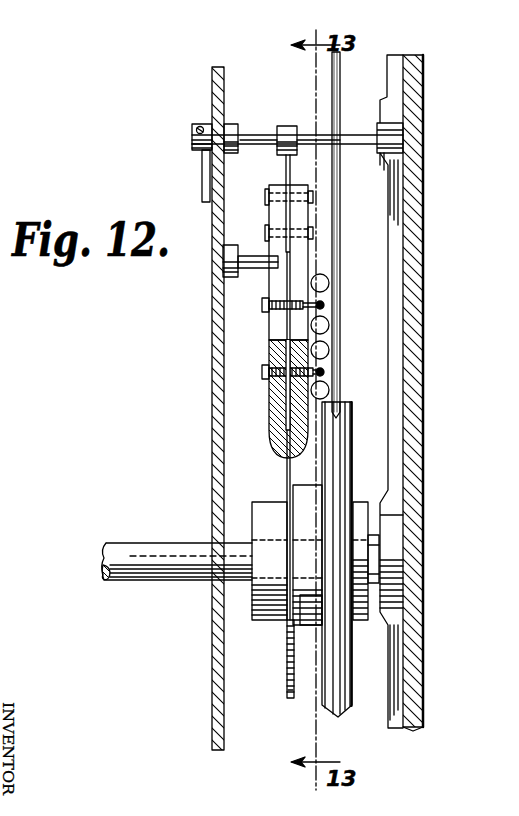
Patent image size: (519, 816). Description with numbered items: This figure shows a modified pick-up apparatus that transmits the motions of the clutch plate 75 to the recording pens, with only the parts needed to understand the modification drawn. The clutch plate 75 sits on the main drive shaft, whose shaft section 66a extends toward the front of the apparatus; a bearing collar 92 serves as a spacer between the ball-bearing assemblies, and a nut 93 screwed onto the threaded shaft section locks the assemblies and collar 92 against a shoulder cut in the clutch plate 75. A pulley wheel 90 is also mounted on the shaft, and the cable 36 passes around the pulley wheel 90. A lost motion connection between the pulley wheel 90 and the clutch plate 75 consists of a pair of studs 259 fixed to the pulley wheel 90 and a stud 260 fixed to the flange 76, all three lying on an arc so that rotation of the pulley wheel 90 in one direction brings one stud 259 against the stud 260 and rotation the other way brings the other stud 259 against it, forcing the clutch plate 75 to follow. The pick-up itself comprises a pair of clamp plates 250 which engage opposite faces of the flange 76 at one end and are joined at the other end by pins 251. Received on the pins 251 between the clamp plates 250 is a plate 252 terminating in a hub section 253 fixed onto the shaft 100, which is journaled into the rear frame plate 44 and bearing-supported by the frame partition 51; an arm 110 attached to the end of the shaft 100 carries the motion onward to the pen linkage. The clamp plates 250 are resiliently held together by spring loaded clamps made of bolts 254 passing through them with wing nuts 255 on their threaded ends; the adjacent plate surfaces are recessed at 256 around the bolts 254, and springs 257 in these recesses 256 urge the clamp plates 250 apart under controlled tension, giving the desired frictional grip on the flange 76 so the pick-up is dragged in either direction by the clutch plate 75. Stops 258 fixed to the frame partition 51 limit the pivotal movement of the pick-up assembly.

The cable 36 is at (340, 240).
The rear frame plate 44 is at (423, 437).
The frame partition 51 is at (212, 325).
The shaft section 66a is at (150, 550).
The clutch plate 75 is at (264, 620).
The flange 76 is at (287, 682).
The pulley wheel 90 is at (351, 700).
The bearing collar 92 is at (303, 530).
The nut 93 is at (379, 560).
The shaft 100 is at (345, 135).
The arm 110 is at (202, 165).
The clamp plates 250 is at (272, 440).
The pins 251 is at (265, 199).
The plate 252 is at (272, 184).
The hub section 253 is at (287, 126).
The bolts 254 is at (325, 304).
The wing nuts 255 is at (330, 280).
The recesses 256 is at (325, 368).
The springs 257 is at (262, 312).
The stops 258 is at (232, 276).
The studs 259 is at (318, 600).
The stud 260 is at (287, 660).